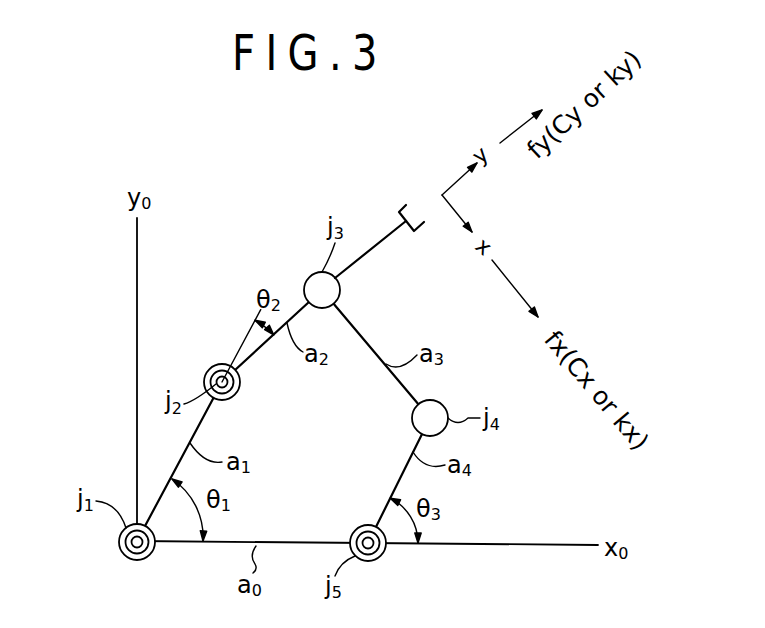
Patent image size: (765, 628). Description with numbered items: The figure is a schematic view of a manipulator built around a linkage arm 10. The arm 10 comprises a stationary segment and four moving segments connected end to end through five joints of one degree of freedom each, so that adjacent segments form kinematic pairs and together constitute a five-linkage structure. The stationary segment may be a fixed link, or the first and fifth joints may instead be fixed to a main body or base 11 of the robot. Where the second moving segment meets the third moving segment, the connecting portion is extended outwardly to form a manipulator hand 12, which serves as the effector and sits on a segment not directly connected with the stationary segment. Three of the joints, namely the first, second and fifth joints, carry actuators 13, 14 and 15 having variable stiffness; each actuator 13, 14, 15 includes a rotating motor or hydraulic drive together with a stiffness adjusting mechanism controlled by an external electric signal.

The linkage arm 10 is at (282, 268).
The main body or base 11 is at (367, 583).
The manipulator hand 12 is at (393, 237).
The actuator 13 is at (122, 551).
The actuator 14 is at (206, 368).
The actuator 15 is at (376, 559).